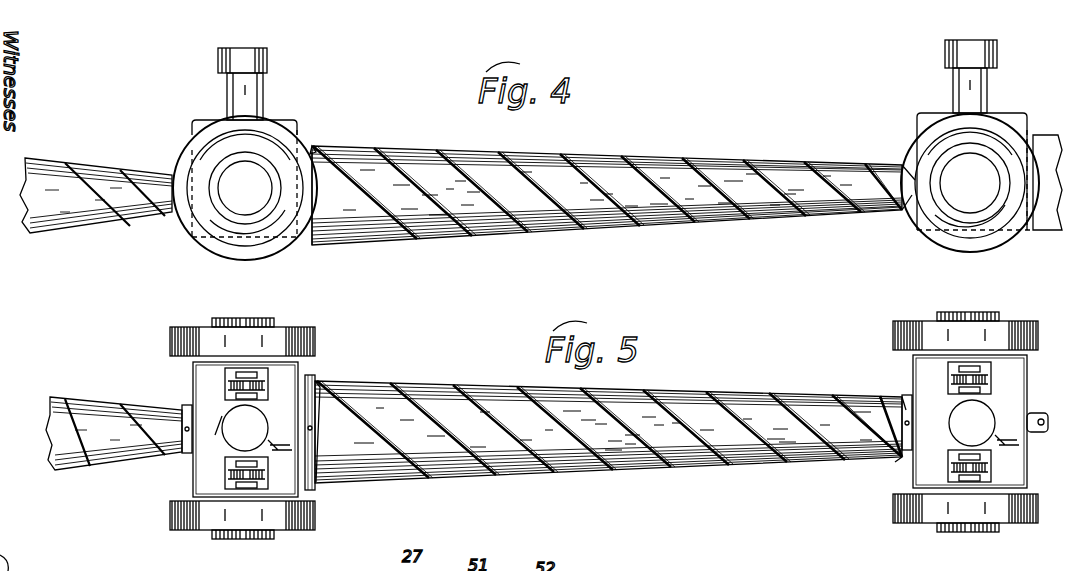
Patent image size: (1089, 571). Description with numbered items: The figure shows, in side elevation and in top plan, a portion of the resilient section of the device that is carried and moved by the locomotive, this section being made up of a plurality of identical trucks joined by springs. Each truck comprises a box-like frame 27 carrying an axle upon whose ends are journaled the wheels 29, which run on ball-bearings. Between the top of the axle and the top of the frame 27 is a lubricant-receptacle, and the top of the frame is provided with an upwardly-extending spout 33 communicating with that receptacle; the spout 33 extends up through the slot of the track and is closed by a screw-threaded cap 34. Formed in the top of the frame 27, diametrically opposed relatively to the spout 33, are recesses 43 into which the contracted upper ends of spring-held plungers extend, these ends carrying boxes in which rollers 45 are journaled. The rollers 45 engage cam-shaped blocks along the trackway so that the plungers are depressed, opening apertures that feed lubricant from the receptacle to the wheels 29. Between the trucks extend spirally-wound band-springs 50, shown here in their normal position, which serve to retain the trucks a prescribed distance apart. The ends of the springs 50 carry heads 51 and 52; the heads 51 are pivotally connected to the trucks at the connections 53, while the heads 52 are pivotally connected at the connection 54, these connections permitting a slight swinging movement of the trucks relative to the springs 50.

In FIG. 4, the box-like frame 27 is at (203, 118).
In FIG. 5, the box-like frame 27 is at (200, 378).
In FIG. 4, the wheels 29 is at (215, 248).
In FIG. 5, the wheels 29 is at (315, 338).
In FIG. 4, the spout 33 is at (263, 90).
In FIG. 4, the screw-threaded cap 34 is at (268, 58).
In FIG. 5, the screw-threaded cap 34 is at (255, 425).
In FIG. 5, the recesses 43 is at (232, 398).
In FIG. 5, the rollers 45 is at (990, 380).
In FIG. 4, the spirally-wound band-springs 50 is at (125, 222).
In FIG. 5, the spirally-wound band-springs 50 is at (108, 405).
In FIG. 4, the head 51 is at (303, 240).
In FIG. 5, the head 51 is at (318, 490).
In FIG. 4, the head 52 is at (905, 215).
In FIG. 5, the head 52 is at (905, 450).
In FIG. 4, the pivotal connection 53 is at (320, 135).
In FIG. 5, the pivotal connection 54 is at (902, 405).